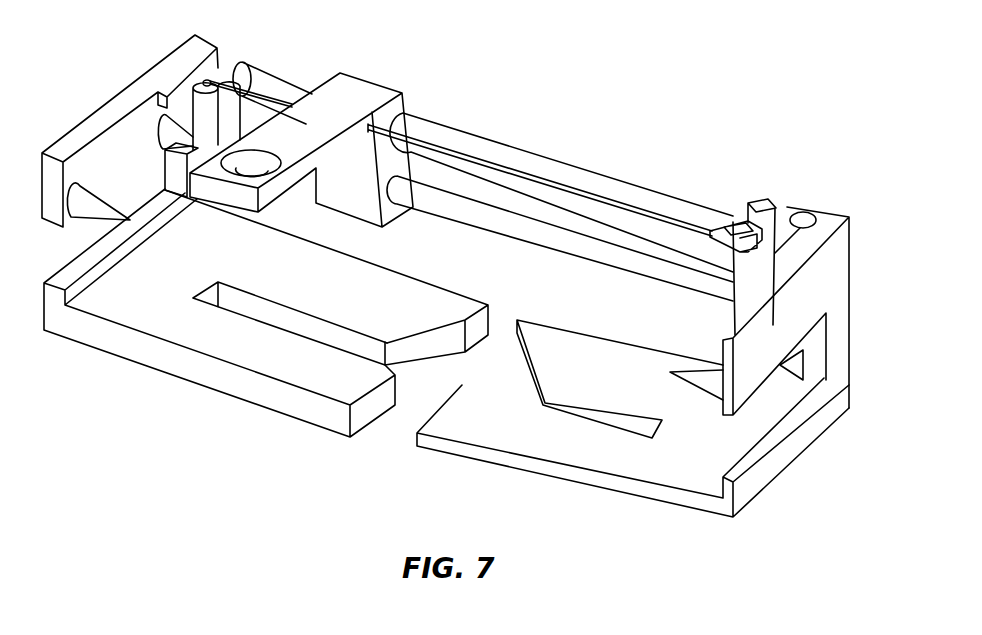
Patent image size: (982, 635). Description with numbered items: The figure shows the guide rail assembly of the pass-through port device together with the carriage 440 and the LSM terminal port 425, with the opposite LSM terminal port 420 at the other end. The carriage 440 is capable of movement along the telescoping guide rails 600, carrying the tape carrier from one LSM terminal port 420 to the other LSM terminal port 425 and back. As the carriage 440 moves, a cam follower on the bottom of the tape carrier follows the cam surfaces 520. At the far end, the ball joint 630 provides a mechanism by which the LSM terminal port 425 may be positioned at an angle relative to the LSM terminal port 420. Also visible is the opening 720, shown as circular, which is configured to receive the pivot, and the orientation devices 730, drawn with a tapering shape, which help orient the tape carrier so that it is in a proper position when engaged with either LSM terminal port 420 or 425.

The LSM terminal port 420 is at (153, 325).
The LSM terminal port 425 is at (530, 443).
The carriage 440 is at (362, 92).
The cam surfaces 520 is at (423, 350).
The telescoping guide rails 600 is at (499, 232).
The ball joint 630 is at (802, 215).
The opening 720 is at (262, 150).
The orientation devices 730 is at (85, 197).